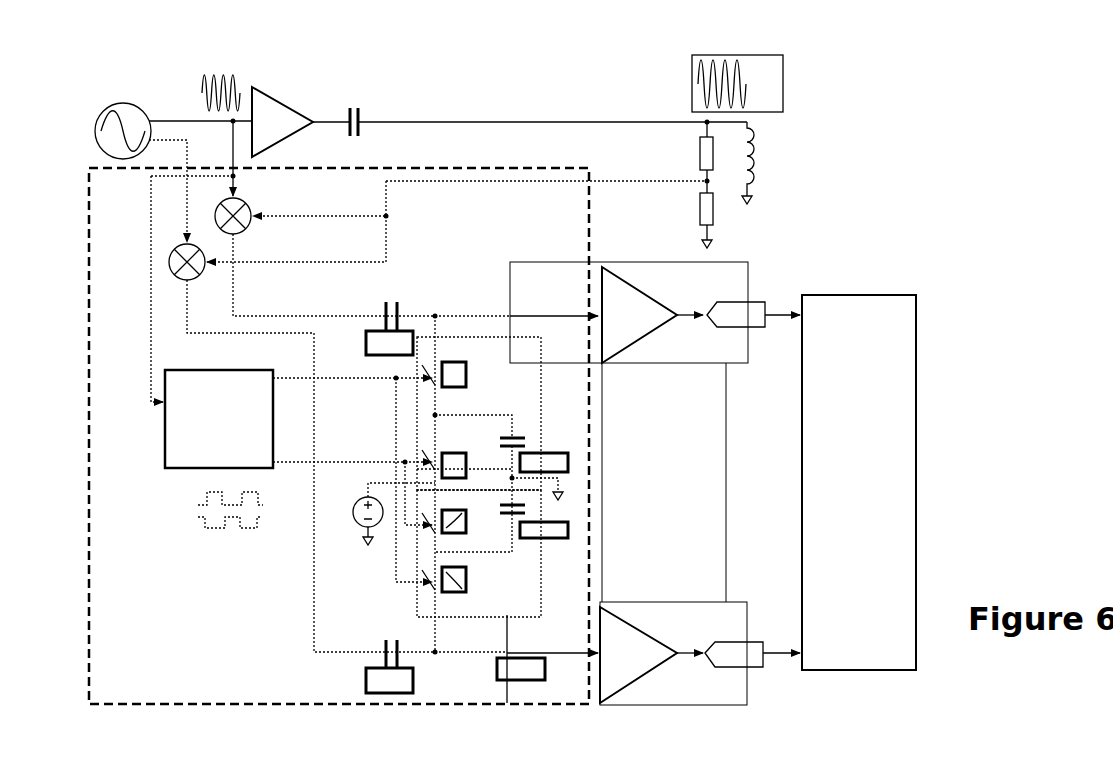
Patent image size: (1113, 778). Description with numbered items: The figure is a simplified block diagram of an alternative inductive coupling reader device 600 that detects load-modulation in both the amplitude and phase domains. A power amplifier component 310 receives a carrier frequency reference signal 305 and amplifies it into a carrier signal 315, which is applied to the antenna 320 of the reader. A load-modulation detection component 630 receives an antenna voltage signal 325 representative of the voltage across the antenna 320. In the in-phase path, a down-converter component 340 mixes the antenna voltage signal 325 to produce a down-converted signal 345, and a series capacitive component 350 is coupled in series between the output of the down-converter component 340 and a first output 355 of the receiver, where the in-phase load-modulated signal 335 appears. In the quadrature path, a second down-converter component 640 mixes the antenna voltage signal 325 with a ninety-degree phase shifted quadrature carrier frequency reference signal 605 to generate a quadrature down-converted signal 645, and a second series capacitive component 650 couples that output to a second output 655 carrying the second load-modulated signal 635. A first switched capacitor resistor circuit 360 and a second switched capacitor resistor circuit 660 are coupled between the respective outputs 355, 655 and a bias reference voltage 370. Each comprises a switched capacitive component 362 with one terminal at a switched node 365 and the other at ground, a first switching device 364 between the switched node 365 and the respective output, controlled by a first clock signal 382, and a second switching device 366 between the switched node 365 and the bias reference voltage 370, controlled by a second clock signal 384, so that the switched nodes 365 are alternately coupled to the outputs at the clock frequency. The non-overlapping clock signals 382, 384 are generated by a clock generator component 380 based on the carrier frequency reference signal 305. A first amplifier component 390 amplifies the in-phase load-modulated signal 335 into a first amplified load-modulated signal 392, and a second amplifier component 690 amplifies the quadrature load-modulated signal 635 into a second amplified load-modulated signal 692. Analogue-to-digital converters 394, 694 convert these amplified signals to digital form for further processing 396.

The carrier frequency reference signal 305 is at (226, 68).
The power amplifier component 310 is at (285, 96).
The carrier signal 315 is at (410, 118).
The antenna 320 is at (773, 182).
The antenna voltage signal 325 is at (490, 183).
The load-modulated signal 335 is at (567, 307).
The down-converter component 340 is at (253, 224).
The down-converted signal 345 is at (238, 295).
The series capacitive component 350 is at (392, 297).
The output of the load-modulation receiver 355 is at (585, 319).
The switched capacitor resistor circuit 360 is at (503, 362).
The switched capacitive component 362 is at (531, 440).
The first switching device 364 is at (444, 378).
The switched node 365 is at (439, 407).
The second switching device 366 is at (446, 456).
The bias reference voltage 370 is at (354, 504).
The clock generator component 380 is at (160, 440).
The first clock signal 382 is at (352, 384).
The second clock signal 384 is at (352, 454).
The first amplifier component 390 is at (630, 284).
The first amplified load-modulated signal 392 is at (680, 306).
The analogue-to-digital converter 394 is at (751, 298).
The further processing 396 is at (870, 295).
The inductive coupling reader device 600 is at (937, 146).
The quadrature carrier frequency reference signal 605 is at (187, 157).
The load-modulation detection component 630 is at (473, 706).
The second load-modulated signal 635 is at (577, 648).
The second down-converter component 640 is at (178, 246).
The quadrature down-converted signal 645 is at (305, 342).
The second series capacitive component 650 is at (385, 634).
The second output 655 is at (587, 657).
The second switched capacitor resistor circuit 660 is at (504, 612).
The second amplifier component 690 is at (638, 626).
The second amplified load-modulated signal 692 is at (687, 648).
The analogue-to-digital converter 694 is at (758, 640).